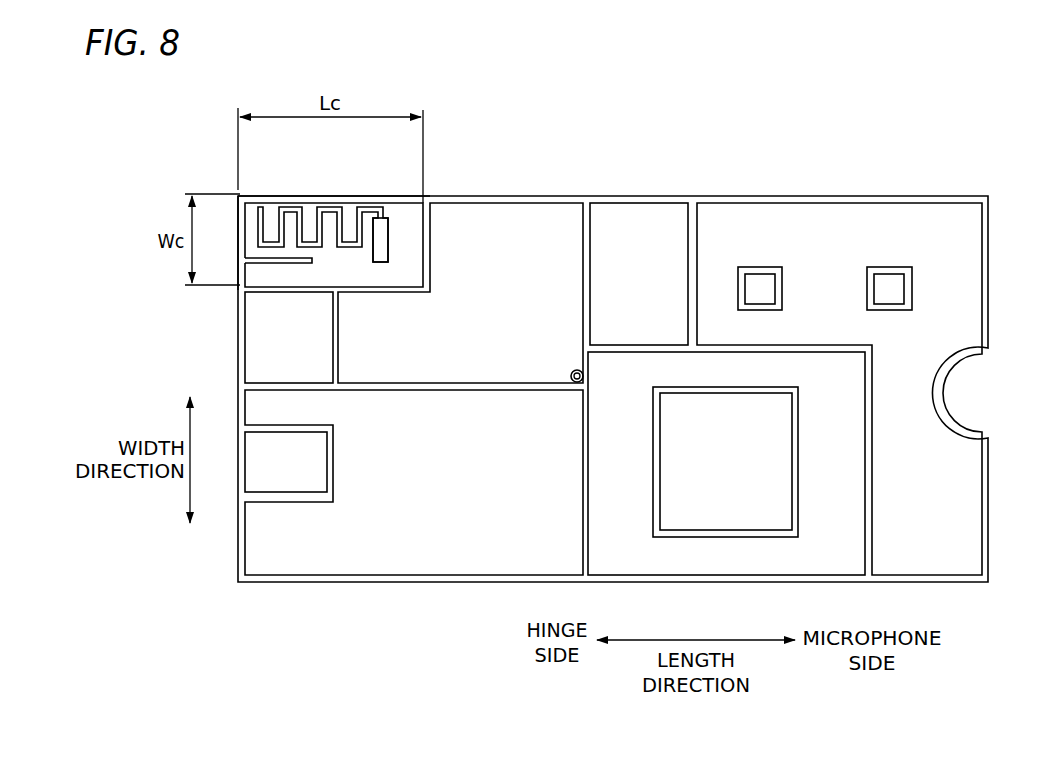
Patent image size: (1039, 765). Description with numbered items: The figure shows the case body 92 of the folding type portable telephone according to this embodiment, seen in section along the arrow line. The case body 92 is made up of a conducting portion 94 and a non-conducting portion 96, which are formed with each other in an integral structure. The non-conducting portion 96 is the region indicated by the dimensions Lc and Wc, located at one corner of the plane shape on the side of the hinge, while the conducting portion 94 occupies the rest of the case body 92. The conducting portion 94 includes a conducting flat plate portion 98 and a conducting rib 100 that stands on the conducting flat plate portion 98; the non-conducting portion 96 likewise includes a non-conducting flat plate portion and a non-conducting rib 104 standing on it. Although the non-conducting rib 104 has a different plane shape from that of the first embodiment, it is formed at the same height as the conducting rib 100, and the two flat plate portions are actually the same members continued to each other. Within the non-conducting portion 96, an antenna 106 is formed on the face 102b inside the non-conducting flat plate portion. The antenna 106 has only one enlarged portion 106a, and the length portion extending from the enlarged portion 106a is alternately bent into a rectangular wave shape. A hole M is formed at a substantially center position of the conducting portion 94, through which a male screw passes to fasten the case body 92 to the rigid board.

The case body 92 is at (846, 161).
The conducting portion 94 is at (642, 196).
The non-conducting portion 96 is at (393, 195).
The conducting flat plate portion 98 is at (447, 530).
The conducting rib 100 is at (580, 263).
The face inside the non-conducting flat plate portion 102b is at (410, 252).
The non-conducting rib 104 is at (238, 222).
The antenna 106 is at (309, 220).
The enlarged portion 106a is at (364, 254).
The hole M is at (584, 373).